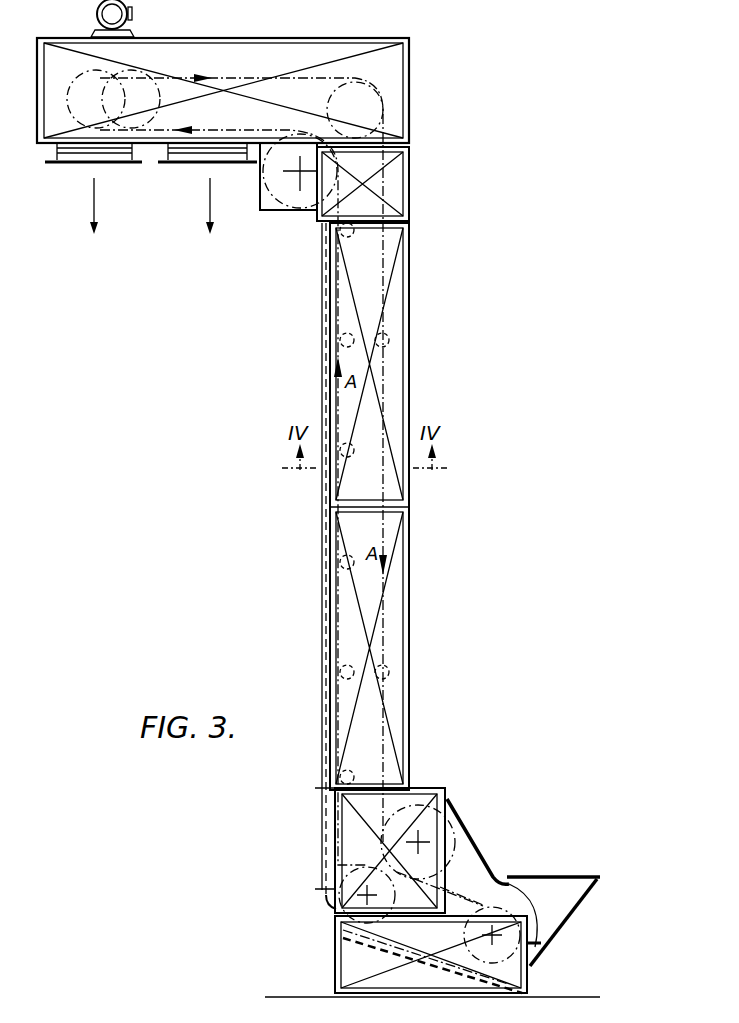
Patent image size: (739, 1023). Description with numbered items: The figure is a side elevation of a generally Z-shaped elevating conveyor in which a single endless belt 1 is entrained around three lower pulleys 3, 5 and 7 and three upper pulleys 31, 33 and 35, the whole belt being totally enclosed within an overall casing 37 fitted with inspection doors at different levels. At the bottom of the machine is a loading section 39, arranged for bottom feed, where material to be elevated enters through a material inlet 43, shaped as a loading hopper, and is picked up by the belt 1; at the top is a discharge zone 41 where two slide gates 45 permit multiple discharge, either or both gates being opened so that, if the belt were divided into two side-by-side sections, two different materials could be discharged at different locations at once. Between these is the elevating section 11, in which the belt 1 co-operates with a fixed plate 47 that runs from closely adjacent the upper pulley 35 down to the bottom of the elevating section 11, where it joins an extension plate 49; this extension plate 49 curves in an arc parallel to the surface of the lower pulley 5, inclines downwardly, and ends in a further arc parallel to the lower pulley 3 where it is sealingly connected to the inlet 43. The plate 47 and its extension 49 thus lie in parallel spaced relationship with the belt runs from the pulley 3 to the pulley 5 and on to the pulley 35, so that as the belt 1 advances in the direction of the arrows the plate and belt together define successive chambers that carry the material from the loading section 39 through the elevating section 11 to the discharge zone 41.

The endless belt 1 is at (472, 866).
The lower pulley 3 is at (530, 966).
The lower pulley 5 is at (365, 868).
The lower pulley 7 is at (455, 831).
The elevating section 11 is at (314, 354).
The upper pulley 31 is at (375, 97).
The upper pulley 33 is at (152, 82).
The upper pulley 35 is at (290, 195).
The casing 37 is at (410, 282).
The loading section 39 is at (562, 939).
The discharge zone 41 is at (66, 181).
The material inlet 43 is at (568, 877).
The slide gates 45 is at (200, 165).
The fixed plate 47 is at (326, 621).
The extension plate 49 is at (320, 906).